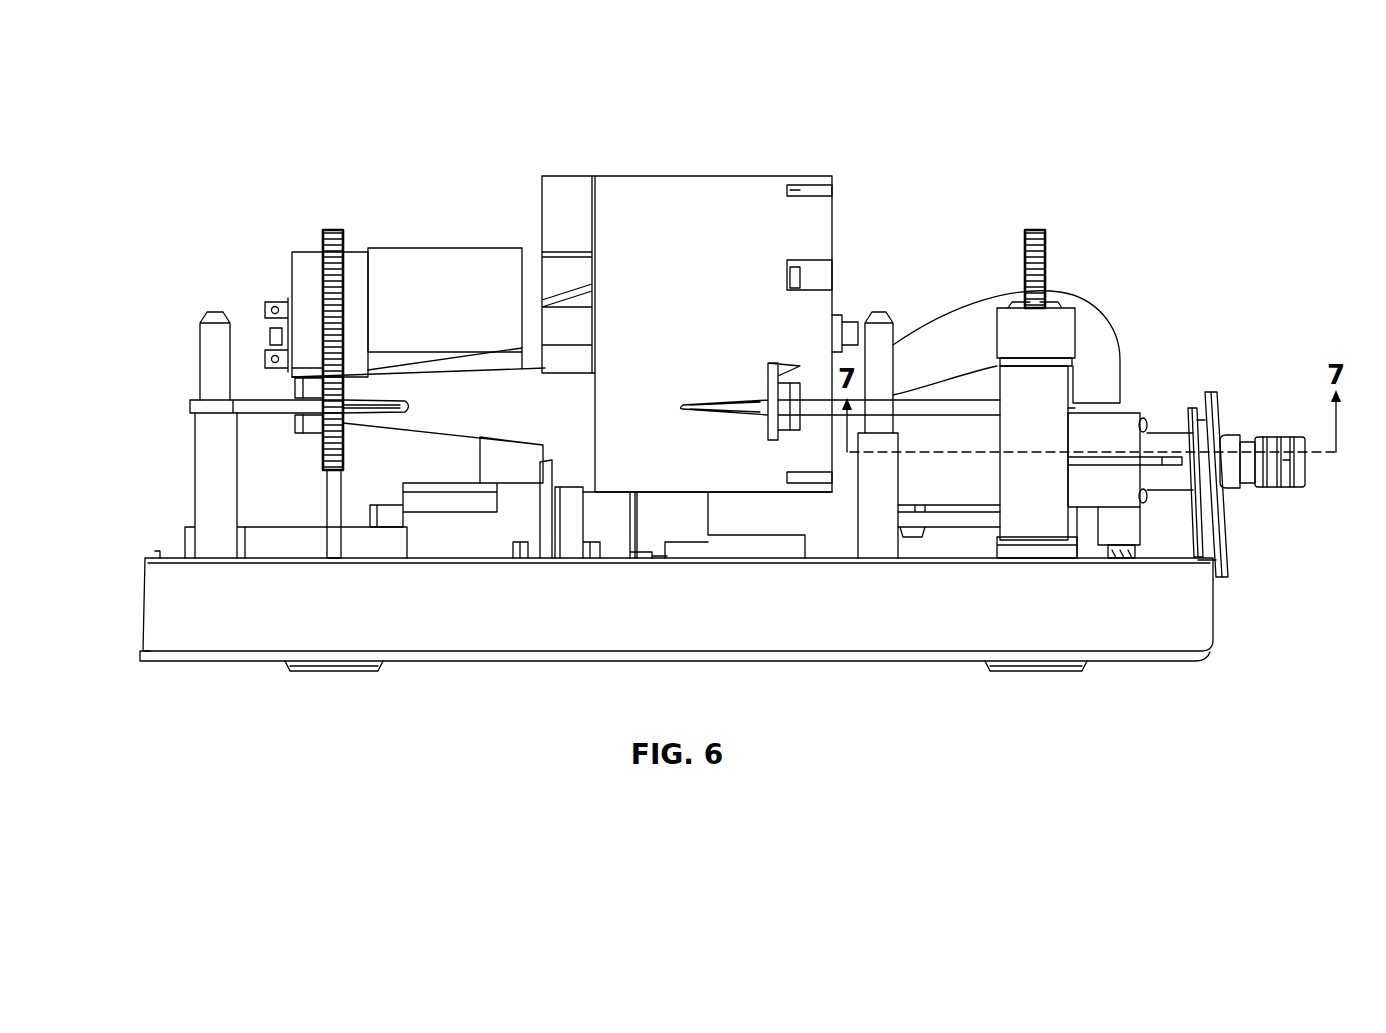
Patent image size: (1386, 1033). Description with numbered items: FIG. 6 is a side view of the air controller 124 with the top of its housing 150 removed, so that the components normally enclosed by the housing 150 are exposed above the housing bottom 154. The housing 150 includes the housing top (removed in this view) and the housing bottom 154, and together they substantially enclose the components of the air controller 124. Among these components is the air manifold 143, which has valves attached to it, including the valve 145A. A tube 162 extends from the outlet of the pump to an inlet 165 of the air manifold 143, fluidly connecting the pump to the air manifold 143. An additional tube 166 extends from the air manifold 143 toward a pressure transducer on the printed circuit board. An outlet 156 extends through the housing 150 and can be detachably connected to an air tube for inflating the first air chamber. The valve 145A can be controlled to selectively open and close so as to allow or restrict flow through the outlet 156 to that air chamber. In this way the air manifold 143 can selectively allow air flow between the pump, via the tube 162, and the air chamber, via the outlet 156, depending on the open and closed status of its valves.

The air controller 124 is at (245, 90).
The air manifold 143 is at (1136, 400).
The valve 145A is at (938, 458).
The housing 150 is at (160, 668).
The housing bottom 154 is at (223, 658).
The outlet 156 is at (1308, 468).
The tube 162 is at (1100, 332).
The inlet 165 is at (1097, 408).
The tube 166 is at (1121, 553).